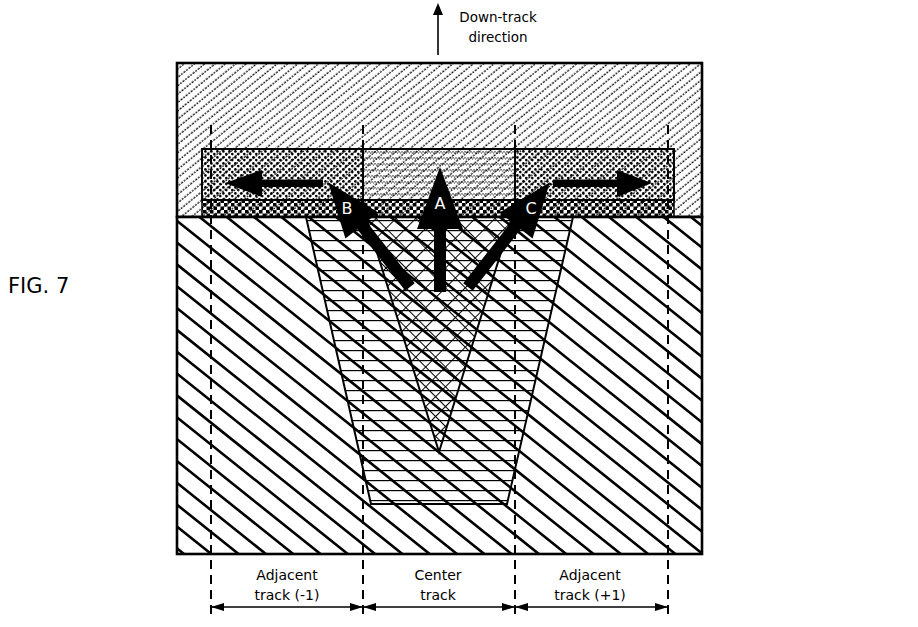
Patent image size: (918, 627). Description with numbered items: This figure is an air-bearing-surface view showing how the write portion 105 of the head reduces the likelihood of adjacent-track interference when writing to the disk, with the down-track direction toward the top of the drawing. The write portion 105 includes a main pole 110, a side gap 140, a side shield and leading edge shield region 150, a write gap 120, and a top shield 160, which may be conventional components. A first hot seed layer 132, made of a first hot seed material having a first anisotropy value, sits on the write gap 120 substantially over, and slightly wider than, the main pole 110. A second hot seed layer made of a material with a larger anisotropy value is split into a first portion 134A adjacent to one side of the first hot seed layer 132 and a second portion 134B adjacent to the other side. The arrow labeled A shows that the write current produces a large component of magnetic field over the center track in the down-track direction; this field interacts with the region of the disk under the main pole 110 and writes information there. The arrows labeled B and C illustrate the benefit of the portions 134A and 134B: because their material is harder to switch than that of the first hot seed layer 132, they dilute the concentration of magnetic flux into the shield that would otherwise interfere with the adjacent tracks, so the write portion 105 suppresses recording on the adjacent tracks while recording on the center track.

The write portion 105 is at (786, 158).
The main pole 110 is at (427, 365).
The write gap 120 is at (290, 222).
The first hot seed layer 132 is at (384, 183).
The first portion of the second hot seed layer 134A is at (309, 174).
The second portion of the second hot seed layer 134B is at (530, 174).
The side gap 140 is at (425, 485).
The side shield and leading edge shield region 150 is at (425, 544).
The top shield 160 is at (427, 113).